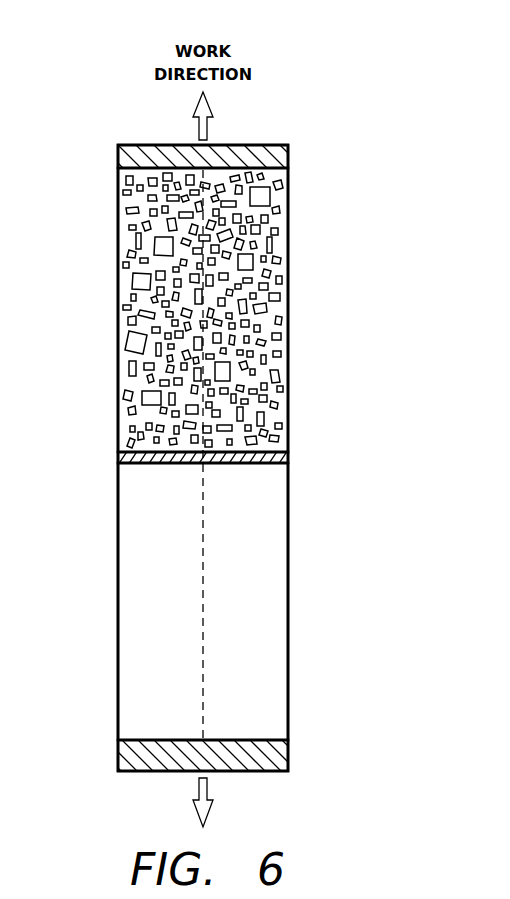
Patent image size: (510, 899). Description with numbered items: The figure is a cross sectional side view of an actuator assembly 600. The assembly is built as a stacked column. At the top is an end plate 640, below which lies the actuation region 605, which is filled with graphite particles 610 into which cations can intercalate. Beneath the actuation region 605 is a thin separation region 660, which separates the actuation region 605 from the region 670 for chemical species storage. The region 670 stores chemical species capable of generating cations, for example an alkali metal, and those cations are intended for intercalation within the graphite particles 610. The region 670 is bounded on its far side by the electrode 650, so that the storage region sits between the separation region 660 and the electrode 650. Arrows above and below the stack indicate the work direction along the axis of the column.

The actuator assembly 600 is at (91, 160).
The actuation region 605 is at (162, 310).
The graphite particles 610 is at (272, 228).
The top plate 640 is at (288, 162).
The electrode 650 is at (268, 771).
The separation region 660 is at (275, 458).
The region for chemical species storage 670 is at (270, 606).